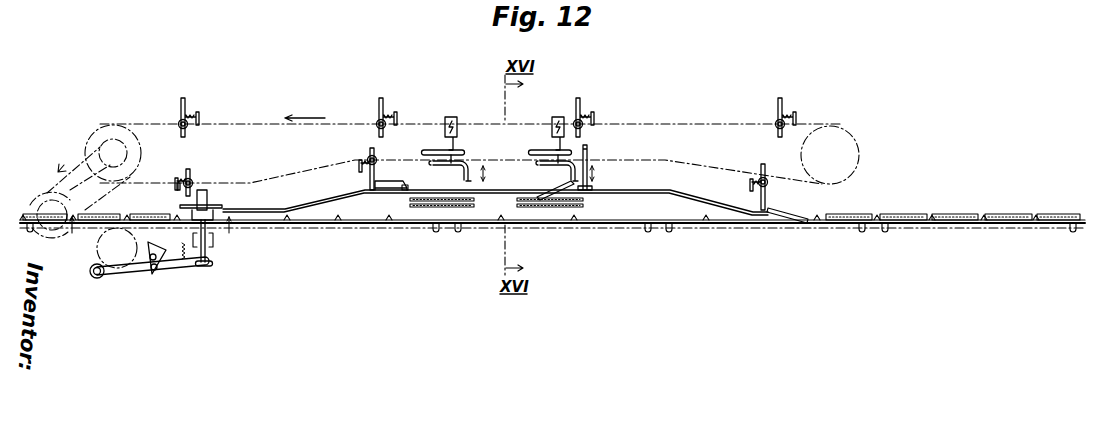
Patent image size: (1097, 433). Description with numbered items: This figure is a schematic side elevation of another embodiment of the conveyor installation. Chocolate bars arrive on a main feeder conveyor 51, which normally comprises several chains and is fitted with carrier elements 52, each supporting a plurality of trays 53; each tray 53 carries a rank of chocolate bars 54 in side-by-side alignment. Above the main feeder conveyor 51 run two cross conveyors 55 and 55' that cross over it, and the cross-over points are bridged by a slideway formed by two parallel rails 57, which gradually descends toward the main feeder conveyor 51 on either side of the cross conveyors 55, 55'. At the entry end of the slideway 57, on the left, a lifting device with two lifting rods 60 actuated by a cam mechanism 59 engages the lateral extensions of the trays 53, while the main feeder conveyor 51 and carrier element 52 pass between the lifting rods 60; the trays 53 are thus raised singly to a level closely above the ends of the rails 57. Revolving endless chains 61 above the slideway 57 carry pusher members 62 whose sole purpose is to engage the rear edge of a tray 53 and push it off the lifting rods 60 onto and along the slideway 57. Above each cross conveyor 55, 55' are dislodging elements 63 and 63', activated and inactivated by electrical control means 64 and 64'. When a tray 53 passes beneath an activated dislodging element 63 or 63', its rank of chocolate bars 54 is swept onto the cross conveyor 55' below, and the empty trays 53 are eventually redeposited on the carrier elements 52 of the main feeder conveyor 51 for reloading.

The main feeder conveyor 51 is at (50, 233).
The carrier element 52 is at (72, 234).
The tray 53 is at (33, 210).
The chocolate bars 54 is at (117, 210).
The cross conveyor 55 is at (442, 237).
The cross conveyor 55' is at (550, 221).
The slideway rails 57 is at (697, 197).
The cam mechanism 59 is at (156, 265).
The lifting rods 60 is at (207, 247).
The endless chains 61 is at (213, 123).
The pusher member 62 is at (181, 108).
The dislodging element 63 is at (461, 134).
The dislodging element 63' is at (585, 162).
The electrical control means 64 is at (443, 122).
The electrical control means 64' is at (550, 117).